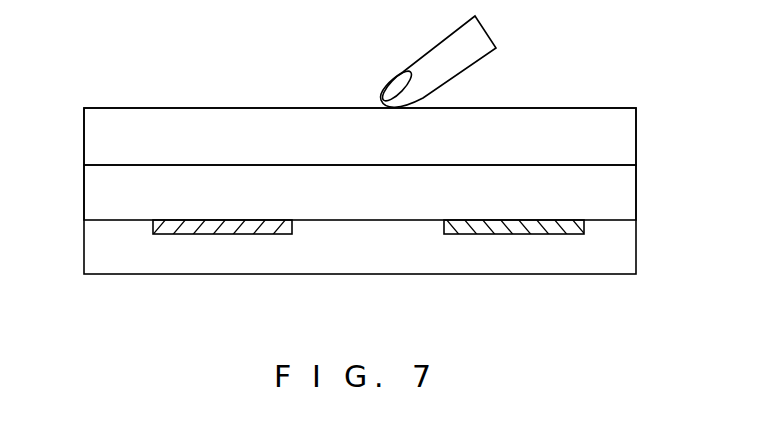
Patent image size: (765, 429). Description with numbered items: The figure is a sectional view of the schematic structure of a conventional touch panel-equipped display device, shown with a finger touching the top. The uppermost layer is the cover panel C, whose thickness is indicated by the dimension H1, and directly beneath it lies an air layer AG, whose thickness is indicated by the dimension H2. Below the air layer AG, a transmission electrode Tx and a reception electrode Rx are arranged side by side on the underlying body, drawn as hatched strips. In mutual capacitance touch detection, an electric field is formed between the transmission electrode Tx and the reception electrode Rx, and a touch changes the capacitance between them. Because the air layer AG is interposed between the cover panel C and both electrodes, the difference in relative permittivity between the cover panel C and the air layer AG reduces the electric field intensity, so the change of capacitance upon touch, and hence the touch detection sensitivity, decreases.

The cover panel C is at (343, 152).
The air layer AG is at (335, 206).
The thickness of cover layer H1 is at (71, 110).
The thickness of air gap H2 is at (71, 167).
The transmission electrode Tx is at (252, 234).
The reception electrode Rx is at (562, 234).